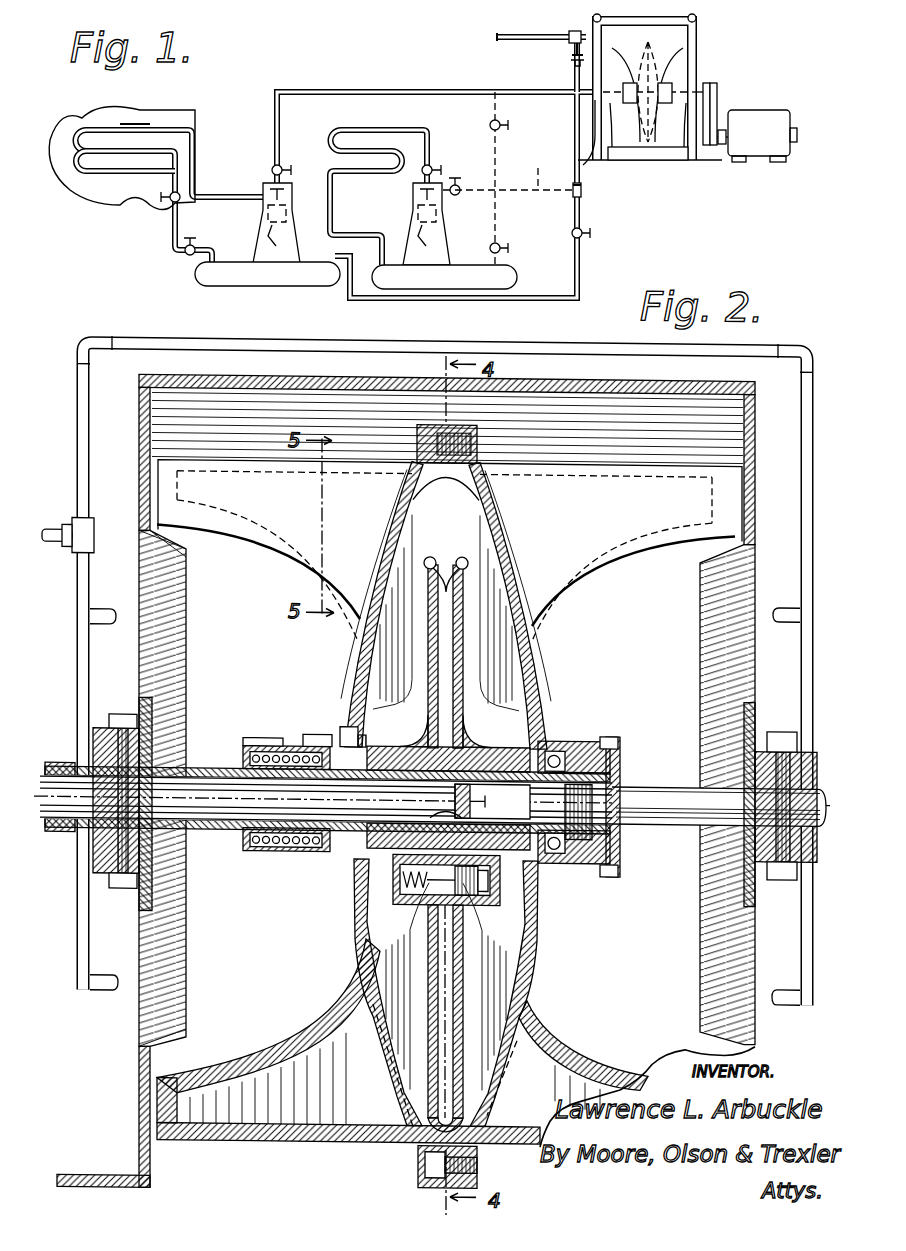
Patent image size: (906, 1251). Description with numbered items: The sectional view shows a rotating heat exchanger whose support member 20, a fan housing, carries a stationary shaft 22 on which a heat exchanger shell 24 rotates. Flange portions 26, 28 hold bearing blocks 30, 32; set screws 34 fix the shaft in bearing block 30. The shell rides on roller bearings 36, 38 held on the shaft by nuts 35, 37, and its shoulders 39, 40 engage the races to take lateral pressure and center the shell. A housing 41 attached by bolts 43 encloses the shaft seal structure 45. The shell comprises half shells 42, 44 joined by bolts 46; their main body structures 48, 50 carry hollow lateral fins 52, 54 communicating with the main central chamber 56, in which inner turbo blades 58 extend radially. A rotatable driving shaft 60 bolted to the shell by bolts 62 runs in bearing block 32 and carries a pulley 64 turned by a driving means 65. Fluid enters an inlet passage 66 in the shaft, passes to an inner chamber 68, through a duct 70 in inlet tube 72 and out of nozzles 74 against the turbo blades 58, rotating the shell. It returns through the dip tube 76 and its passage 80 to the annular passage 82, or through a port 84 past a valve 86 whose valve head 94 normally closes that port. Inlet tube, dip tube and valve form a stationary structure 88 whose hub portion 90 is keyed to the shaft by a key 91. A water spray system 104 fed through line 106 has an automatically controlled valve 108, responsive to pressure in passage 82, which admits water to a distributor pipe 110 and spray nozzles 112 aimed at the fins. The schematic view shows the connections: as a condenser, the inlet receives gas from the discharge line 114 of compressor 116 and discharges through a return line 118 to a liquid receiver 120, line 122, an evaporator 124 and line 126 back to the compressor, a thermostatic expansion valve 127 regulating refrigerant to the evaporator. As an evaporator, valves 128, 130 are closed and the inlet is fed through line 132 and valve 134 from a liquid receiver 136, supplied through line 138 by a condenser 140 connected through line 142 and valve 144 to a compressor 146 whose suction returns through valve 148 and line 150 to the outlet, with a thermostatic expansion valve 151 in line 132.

In FIG. 1, the support member 20 is at (757, 143).
In FIG. 2, the support member 20 is at (139, 434).
In FIG. 1, the stationary shaft 22 is at (614, 100).
In FIG. 2, the stationary shaft 22 is at (210, 824).
In FIG. 1, the heat exchanger shell 24 is at (668, 70).
In FIG. 2, the heat exchanger shell 24 is at (338, 666).
In FIG. 2, the flange portion 26 is at (155, 773).
In FIG. 2, the flange portion 28 is at (782, 727).
In FIG. 2, the bearing block 30 is at (152, 744).
In FIG. 2, the bearing block 32 is at (755, 762).
In FIG. 2, the set screws 34 is at (150, 730).
In FIG. 2, the nut 35 is at (342, 738).
In FIG. 2, the roller bearing 36 is at (356, 738).
In FIG. 2, the nut 37 is at (612, 764).
In FIG. 2, the roller bearing 38 is at (556, 748).
In FIG. 2, the shoulder 39 is at (360, 740).
In FIG. 2, the shoulder 40 is at (600, 846).
In FIG. 2, the housing 41 is at (299, 791).
In FIG. 2, the half shell 42 is at (317, 1013).
In FIG. 2, the bolts 43 is at (303, 744).
In FIG. 2, the half shell 44 is at (546, 1007).
In FIG. 2, the shaft seal structure 45 is at (258, 748).
In FIG. 2, the bolts 46 is at (420, 1165).
In FIG. 2, the main body structure 48 is at (402, 1041).
In FIG. 2, the main body structure 50 is at (523, 948).
In FIG. 2, the lateral fin 52 is at (273, 1056).
In FIG. 2, the lateral fin 54 is at (573, 1048).
In FIG. 2, the main central chamber 56 is at (500, 690).
In FIG. 2, the inner turbo blades 58 is at (495, 636).
In FIG. 2, the rotatable driving shaft 60 is at (676, 826).
In FIG. 2, the bolts 62 is at (612, 738).
In FIG. 1, the pulley 64 is at (712, 83).
In FIG. 1, the driving means 65 is at (766, 160).
In FIG. 2, the inlet passage 66 is at (62, 790).
In FIG. 2, the inner chamber 68 is at (492, 801).
In FIG. 2, the duct 70 is at (505, 672).
In FIG. 2, the inlet tube 72 is at (466, 610).
In FIG. 2, the nozzles 74 is at (468, 560).
In FIG. 2, the dip tube 76 is at (440, 1088).
In FIG. 2, the passage 80 is at (472, 1019).
In FIG. 2, the annular passage 82 is at (232, 826).
In FIG. 2, the port 84 is at (441, 896).
In FIG. 2, the valve 86 is at (395, 906).
In FIG. 2, the structure 88 is at (400, 890).
In FIG. 2, the hub portion 90 is at (393, 878).
In FIG. 2, the key 91 is at (547, 878).
In FIG. 2, the valve head 94 is at (537, 917).
In FIG. 1, the water spray system 104 is at (674, 105).
In FIG. 1, the line 106 is at (533, 40).
In FIG. 1, the automatically controlled valve 108 is at (570, 60).
In FIG. 1, the distributor pipe 110 is at (572, 35).
In FIG. 1, the spray nozzles 112 is at (600, 165).
In FIG. 2, the spray nozzles 112 is at (105, 612).
In FIG. 1, the discharge line 114 is at (360, 90).
In FIG. 1, the compressor 116 is at (263, 190).
In FIG. 1, the return line 118 is at (425, 301).
In FIG. 1, the liquid receiver 120 is at (308, 283).
In FIG. 1, the line 122 is at (172, 235).
In FIG. 1, the evaporator 124 is at (85, 205).
In FIG. 1, the line 126 is at (193, 130).
In FIG. 1, the thermostatic expansion valve 127 is at (170, 201).
In FIG. 1, the valve 128 is at (275, 166).
In FIG. 1, the valve 130 is at (583, 232).
In FIG. 1, the line 132 is at (494, 111).
In FIG. 1, the valve 134 is at (500, 246).
In FIG. 1, the liquid receiver 136 is at (503, 270).
In FIG. 1, the line 138 is at (333, 238).
In FIG. 1, the condenser 140 is at (356, 130).
In FIG. 1, the line 142 is at (424, 130).
In FIG. 1, the valve 144 is at (432, 166).
In FIG. 1, the compressor 146 is at (441, 232).
In FIG. 1, the valve 148 is at (459, 186).
In FIG. 1, the line 150 is at (538, 186).
In FIG. 1, the thermostatic expansion valve 151 is at (500, 126).